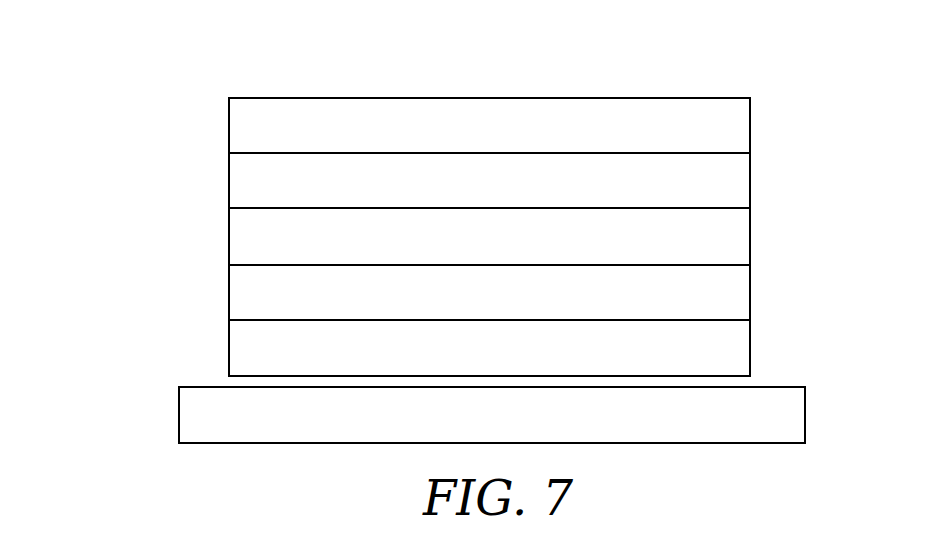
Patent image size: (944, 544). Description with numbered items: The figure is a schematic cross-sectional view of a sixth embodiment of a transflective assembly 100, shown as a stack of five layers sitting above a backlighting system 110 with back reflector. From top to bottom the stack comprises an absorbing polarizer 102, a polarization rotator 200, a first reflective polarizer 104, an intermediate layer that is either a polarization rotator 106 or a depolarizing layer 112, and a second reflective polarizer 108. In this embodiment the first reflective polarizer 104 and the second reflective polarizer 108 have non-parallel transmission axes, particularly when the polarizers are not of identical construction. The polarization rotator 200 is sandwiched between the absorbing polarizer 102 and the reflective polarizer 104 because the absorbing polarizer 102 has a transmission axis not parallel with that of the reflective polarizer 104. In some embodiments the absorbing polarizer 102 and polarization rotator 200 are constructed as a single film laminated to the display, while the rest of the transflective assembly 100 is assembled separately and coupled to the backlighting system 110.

The transflective assembly 100 is at (605, 62).
The absorbing polarizer 102 is at (229, 129).
The polarization rotator 200 is at (229, 182).
The reflective polarizer 104 is at (229, 236).
The polarization rotator 106 is at (229, 292).
The depolarizing layer 112 is at (489, 292).
The second reflective polarizer 108 is at (229, 347).
The backlighting system 110 is at (179, 418).